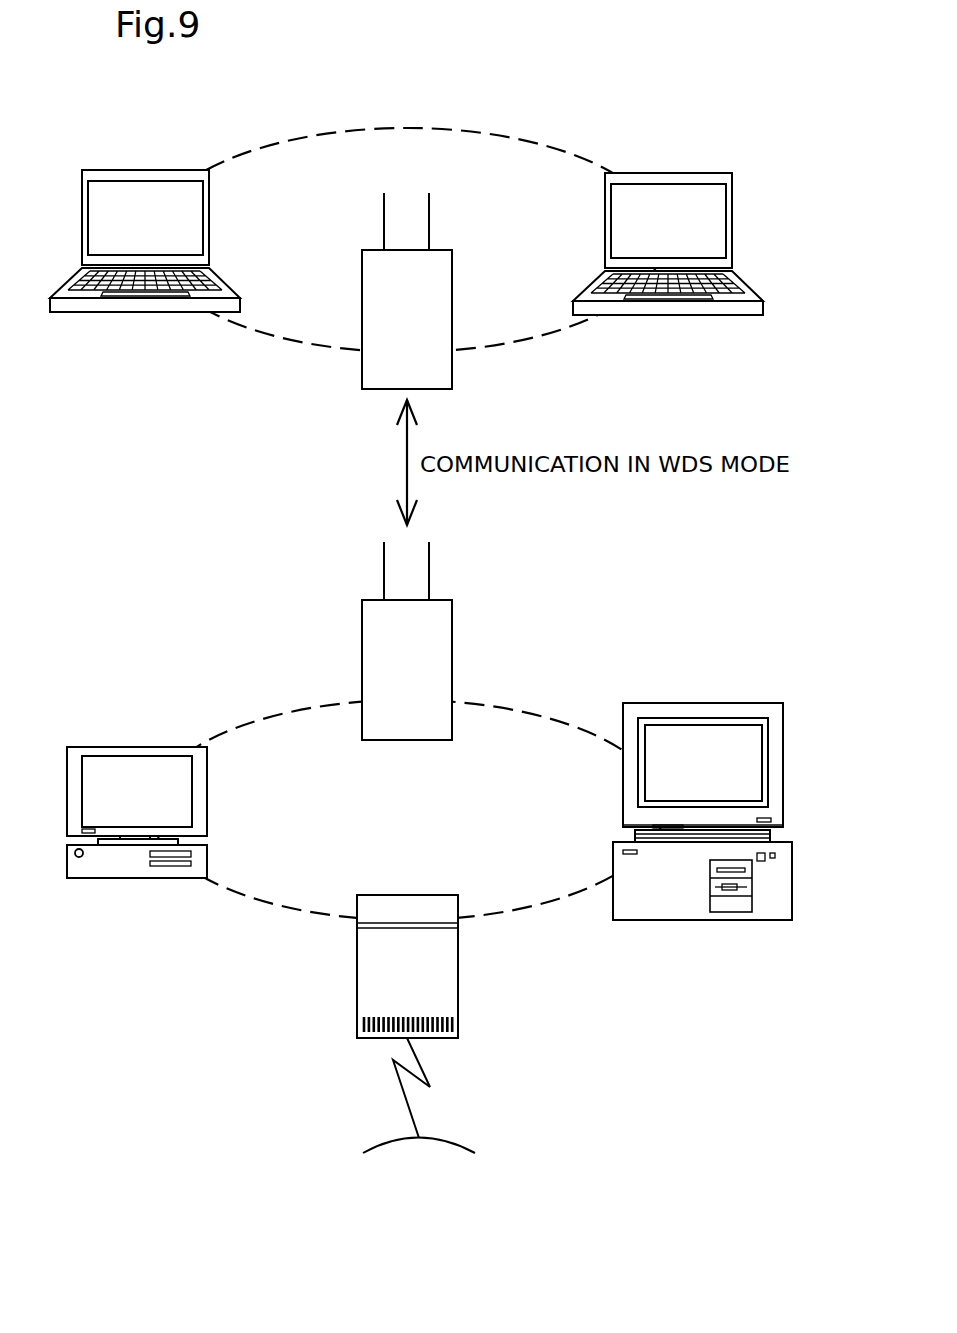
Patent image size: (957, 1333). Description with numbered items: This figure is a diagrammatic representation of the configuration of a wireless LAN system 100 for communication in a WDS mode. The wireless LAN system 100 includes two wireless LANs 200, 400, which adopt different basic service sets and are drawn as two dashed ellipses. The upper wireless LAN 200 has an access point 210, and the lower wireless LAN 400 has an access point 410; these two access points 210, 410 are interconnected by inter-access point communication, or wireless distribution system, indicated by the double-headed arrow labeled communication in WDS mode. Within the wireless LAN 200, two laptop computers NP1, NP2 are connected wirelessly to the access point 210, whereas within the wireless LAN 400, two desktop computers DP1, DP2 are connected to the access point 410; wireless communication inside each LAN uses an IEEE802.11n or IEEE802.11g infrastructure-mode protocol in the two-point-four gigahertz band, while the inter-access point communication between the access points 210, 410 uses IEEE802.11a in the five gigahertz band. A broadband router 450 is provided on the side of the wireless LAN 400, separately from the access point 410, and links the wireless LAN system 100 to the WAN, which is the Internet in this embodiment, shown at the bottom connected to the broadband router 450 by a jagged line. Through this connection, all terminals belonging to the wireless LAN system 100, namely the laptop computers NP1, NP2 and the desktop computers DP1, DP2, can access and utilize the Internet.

The wireless LAN system 100 is at (612, 590).
The wireless LAN 200 is at (388, 181).
The access point 210 is at (452, 368).
The wireless LAN 400 is at (388, 822).
The access point 410 is at (452, 624).
The broadband router 450 is at (458, 966).
The laptop computer NP1 is at (143, 170).
The laptop computer NP2 is at (670, 173).
The desktop computer DP1 is at (103, 747).
The desktop computer DP2 is at (703, 703).
The wide area network WAN is at (419, 1106).